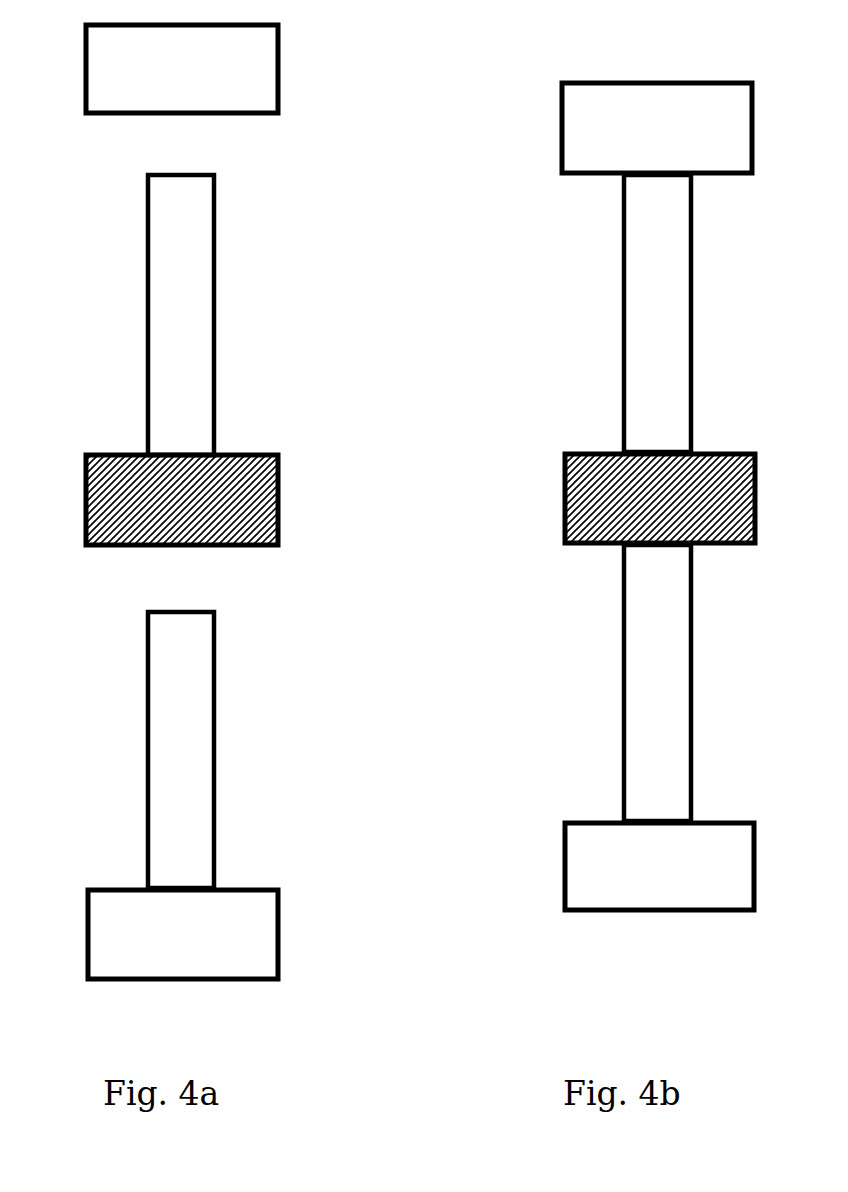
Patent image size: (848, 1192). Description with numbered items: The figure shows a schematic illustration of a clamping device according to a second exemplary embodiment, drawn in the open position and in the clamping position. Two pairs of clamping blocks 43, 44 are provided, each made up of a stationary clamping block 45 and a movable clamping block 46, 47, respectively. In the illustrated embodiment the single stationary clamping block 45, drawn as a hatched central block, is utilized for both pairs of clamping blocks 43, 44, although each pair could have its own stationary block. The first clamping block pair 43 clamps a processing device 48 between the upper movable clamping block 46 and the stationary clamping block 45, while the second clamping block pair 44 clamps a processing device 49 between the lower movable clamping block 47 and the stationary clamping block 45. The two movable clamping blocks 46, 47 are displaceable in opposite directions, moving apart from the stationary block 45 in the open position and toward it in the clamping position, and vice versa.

In FIG. 4A, the pair of clamping blocks 43 is at (325, 193).
In FIG. 4A, the pair of clamping blocks 44 is at (325, 576).
In FIG. 4A, the stationary clamping block 45 is at (228, 500).
In FIG. 4B, the stationary clamping block 45 is at (653, 513).
In FIG. 4A, the movable clamping block 46 is at (237, 65).
In FIG. 4B, the movable clamping block 46 is at (588, 113).
In FIG. 4A, the movable clamping block 47 is at (218, 935).
In FIG. 4B, the movable clamping block 47 is at (660, 872).
In FIG. 4A, the processing device 48 is at (172, 314).
In FIG. 4B, the processing device 48 is at (655, 305).
In FIG. 4A, the processing device 49 is at (172, 677).
In FIG. 4B, the processing device 49 is at (653, 758).